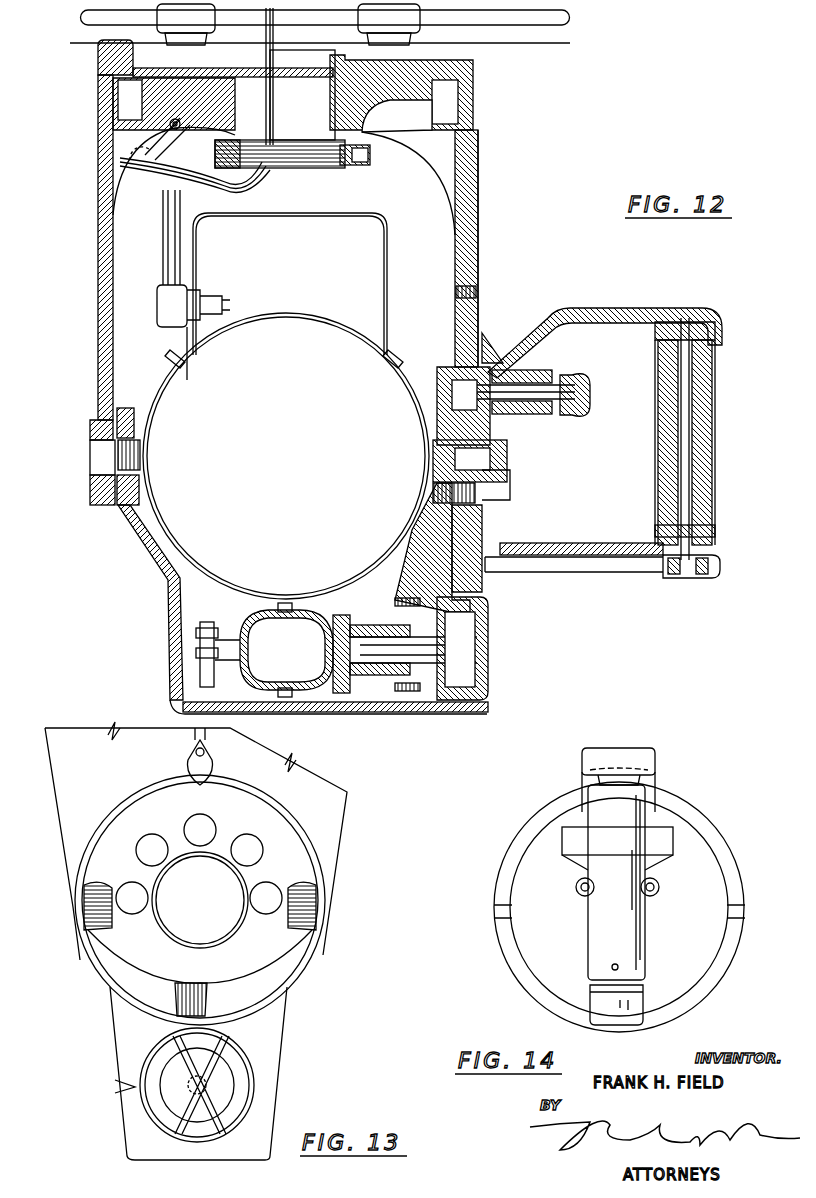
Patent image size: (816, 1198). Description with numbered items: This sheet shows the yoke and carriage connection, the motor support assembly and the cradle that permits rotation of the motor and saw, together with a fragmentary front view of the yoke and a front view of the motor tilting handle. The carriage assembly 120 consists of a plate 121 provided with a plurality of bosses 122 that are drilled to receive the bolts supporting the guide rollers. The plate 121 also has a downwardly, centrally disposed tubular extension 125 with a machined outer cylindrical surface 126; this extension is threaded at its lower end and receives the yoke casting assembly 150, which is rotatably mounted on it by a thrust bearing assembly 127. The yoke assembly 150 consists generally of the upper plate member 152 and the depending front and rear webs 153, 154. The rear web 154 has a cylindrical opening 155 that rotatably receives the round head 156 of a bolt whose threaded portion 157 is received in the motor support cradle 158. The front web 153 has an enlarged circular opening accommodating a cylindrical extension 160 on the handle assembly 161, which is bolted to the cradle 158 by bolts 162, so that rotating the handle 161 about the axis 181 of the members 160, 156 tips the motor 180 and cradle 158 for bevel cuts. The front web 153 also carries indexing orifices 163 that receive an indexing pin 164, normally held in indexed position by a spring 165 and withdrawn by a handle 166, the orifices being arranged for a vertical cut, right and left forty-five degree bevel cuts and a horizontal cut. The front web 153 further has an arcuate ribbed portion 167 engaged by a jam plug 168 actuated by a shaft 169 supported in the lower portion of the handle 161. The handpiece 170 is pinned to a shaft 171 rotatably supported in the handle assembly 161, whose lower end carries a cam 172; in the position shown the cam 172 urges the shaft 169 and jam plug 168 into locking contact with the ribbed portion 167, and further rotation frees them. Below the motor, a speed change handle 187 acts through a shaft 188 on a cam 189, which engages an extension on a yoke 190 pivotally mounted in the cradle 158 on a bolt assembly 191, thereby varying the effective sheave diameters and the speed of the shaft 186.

In FIG. 12, the carriage assembly 120 is at (418, 74).
In FIG. 12, the plate 121 is at (97, 62).
In FIG. 12, the bosses 122 is at (217, 40).
In FIG. 12, the tubular extension 125 is at (330, 113).
In FIG. 12, the outer cylindrical surface 126 is at (332, 92).
In FIG. 12, the thrust bearing assembly 127 is at (355, 170).
In FIG. 12, the yoke casting assembly 150 is at (480, 143).
In FIG. 12, the upper plate member 152 is at (414, 96).
In FIG. 12, the front web 153 is at (480, 207).
In FIG. 13, the front web 153 is at (338, 838).
In FIG. 12, the rear web 154 is at (97, 190).
In FIG. 12, the cylindrical opening 155 is at (90, 472).
In FIG. 12, the round head 156 is at (97, 440).
In FIG. 12, the threaded portion 157 is at (140, 466).
In FIG. 12, the motor support cradle 158 is at (142, 528).
In FIG. 12, the cylindrical extension 160 is at (480, 502).
In FIG. 12, the handle assembly 161 is at (600, 312).
In FIG. 14, the handle assembly 161 is at (640, 755).
In FIG. 12, the bolts 162 is at (505, 490).
In FIG. 13, the indexing orifices 163 is at (128, 886).
In FIG. 12, the indexing pin 164 is at (500, 383).
In FIG. 12, the spring 165 is at (537, 372).
In FIG. 12, the handle 166 is at (591, 388).
In FIG. 13, the arcuate ribbed portion 167 is at (290, 950).
In FIG. 12, the jam plug 168 is at (488, 575).
In FIG. 12, the shaft 169 is at (607, 572).
In FIG. 12, the handpiece 170 is at (714, 463).
In FIG. 14, the handpiece 170 is at (622, 826).
In FIG. 12, the shaft 171 is at (690, 322).
In FIG. 12, the cam 172 is at (675, 575).
In FIG. 12, the motor 180 is at (338, 437).
In FIG. 13, the axis 181 is at (215, 921).
In FIG. 12, the shaft 186 is at (300, 660).
In FIG. 12, the handle 187 is at (486, 692).
In FIG. 13, the handle 187 is at (215, 1062).
In FIG. 12, the shaft 188 is at (480, 653).
In FIG. 12, the cam 189 is at (340, 683).
In FIG. 12, the yoke 190 is at (257, 682).
In FIG. 12, the bolt assembly 191 is at (207, 625).